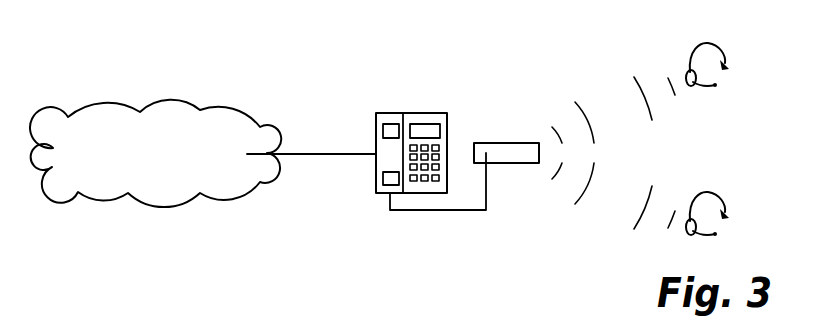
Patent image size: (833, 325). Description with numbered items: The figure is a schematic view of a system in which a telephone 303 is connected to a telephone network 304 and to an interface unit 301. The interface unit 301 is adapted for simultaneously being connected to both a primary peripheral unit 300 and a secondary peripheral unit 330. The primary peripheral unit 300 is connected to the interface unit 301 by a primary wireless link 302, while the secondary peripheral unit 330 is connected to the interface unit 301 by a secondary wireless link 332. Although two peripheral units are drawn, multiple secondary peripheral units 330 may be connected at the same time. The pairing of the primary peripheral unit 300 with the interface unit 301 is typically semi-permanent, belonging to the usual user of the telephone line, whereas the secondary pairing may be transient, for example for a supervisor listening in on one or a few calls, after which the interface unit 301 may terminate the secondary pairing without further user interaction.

The primary peripheral unit 300 is at (746, 53).
The interface unit 301 is at (497, 153).
The primary wireless link 302 is at (592, 120).
The telephone 303 is at (403, 113).
The telephone network 304 is at (153, 153).
The secondary peripheral unit 330 is at (752, 197).
The secondary wireless link 332 is at (592, 188).